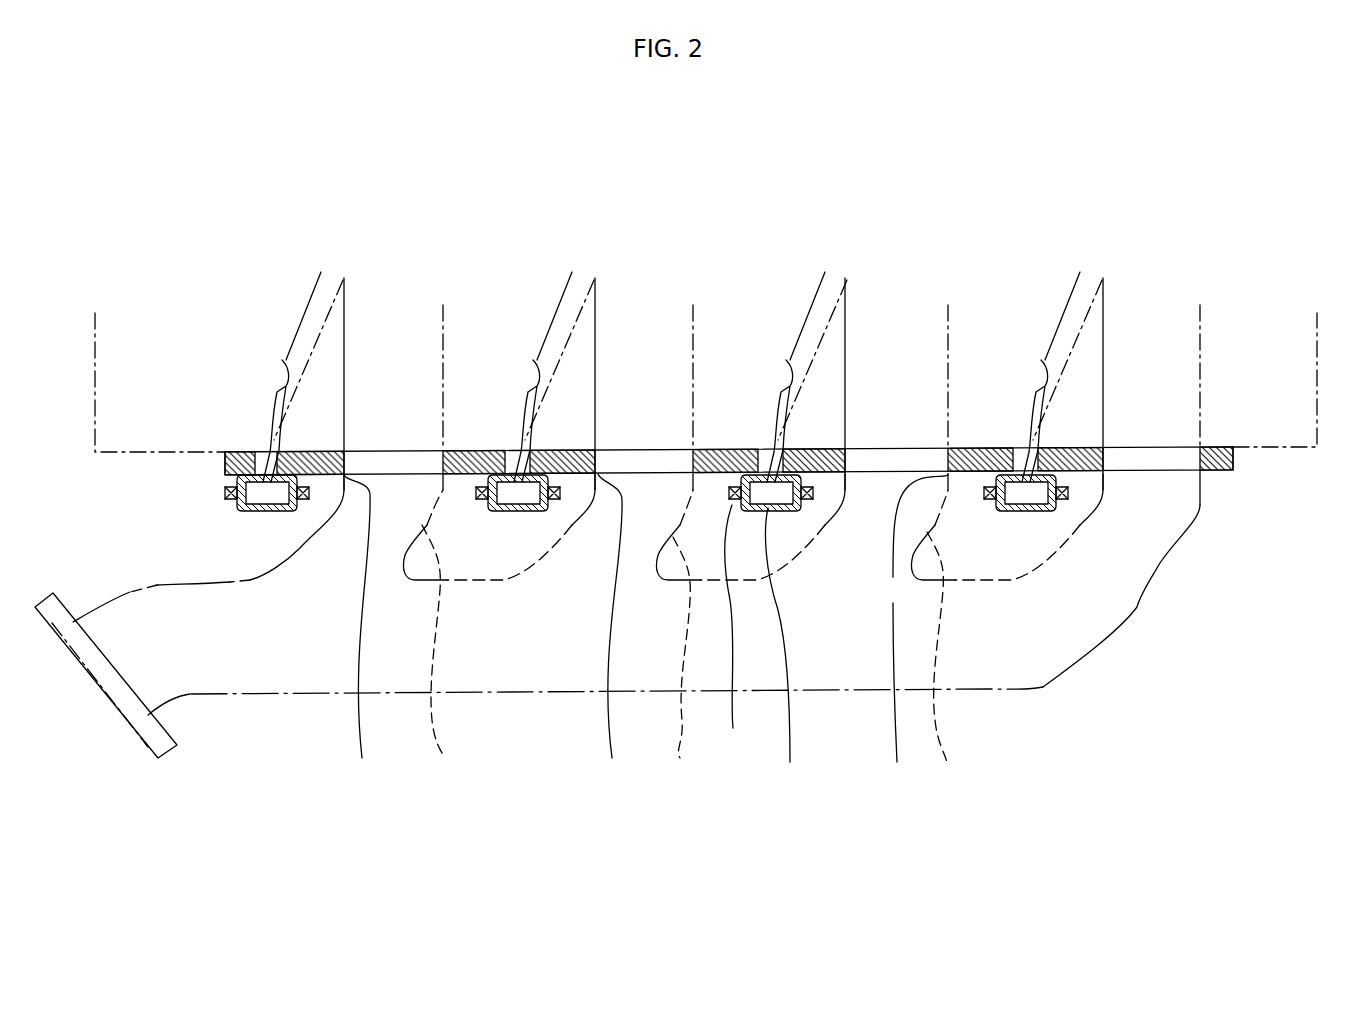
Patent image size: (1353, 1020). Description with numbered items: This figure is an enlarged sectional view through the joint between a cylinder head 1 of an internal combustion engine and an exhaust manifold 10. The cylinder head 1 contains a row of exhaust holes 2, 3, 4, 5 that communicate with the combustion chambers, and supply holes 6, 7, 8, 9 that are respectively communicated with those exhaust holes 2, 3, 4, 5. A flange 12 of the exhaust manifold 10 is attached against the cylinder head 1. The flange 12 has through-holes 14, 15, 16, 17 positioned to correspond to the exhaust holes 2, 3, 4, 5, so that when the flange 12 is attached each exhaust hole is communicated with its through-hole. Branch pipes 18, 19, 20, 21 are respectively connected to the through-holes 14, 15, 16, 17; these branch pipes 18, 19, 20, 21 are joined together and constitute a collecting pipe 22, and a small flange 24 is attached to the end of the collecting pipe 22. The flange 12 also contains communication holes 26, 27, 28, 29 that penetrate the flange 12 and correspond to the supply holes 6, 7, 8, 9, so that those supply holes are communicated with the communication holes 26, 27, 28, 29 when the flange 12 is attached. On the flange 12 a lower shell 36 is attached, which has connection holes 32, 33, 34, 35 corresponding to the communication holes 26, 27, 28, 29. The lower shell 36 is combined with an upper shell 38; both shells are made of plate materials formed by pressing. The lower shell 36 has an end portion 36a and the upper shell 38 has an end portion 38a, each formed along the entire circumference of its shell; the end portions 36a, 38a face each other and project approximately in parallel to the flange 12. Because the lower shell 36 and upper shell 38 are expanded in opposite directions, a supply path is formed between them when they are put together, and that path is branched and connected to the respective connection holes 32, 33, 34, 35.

The cylinder head 1 is at (1295, 440).
The exhaust hole 2 is at (1200, 370).
The exhaust hole 3 is at (948, 370).
The exhaust hole 4 is at (693, 370).
The exhaust hole 5 is at (443, 370).
The supply hole 6 is at (1041, 360).
The supply hole 7 is at (786, 360).
The supply hole 8 is at (533, 360).
The supply hole 9 is at (282, 360).
The exhaust manifold 10 is at (1047, 693).
The flange 12 is at (1225, 472).
The through-hole 14 is at (1198, 462).
The through-hole 15 is at (904, 630).
The through-hole 16 is at (614, 630).
The through-hole 17 is at (363, 629).
The branch pipe 18 is at (1140, 607).
The branch pipe 19 is at (944, 659).
The branch pipe 20 is at (680, 661).
The branch pipe 21 is at (442, 655).
The collecting pipe 22 is at (203, 670).
The small flange 24 is at (167, 747).
The communication hole 26 is at (1016, 452).
The communication hole 27 is at (762, 454).
The communication hole 28 is at (511, 454).
The communication hole 29 is at (255, 458).
The connection hole 32 is at (1039, 450).
The connection hole 33 is at (784, 450).
The connection hole 34 is at (531, 450).
The connection hole 35 is at (280, 450).
The lower shell 36 is at (853, 479).
The end portion 36a is at (737, 456).
The upper shell 38 is at (785, 648).
The end portion 38a is at (732, 630).